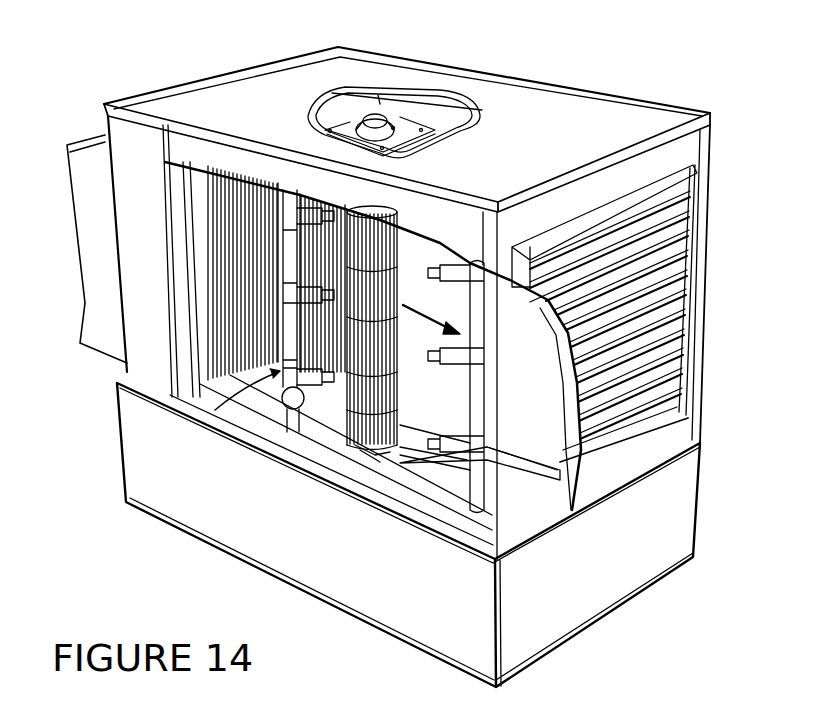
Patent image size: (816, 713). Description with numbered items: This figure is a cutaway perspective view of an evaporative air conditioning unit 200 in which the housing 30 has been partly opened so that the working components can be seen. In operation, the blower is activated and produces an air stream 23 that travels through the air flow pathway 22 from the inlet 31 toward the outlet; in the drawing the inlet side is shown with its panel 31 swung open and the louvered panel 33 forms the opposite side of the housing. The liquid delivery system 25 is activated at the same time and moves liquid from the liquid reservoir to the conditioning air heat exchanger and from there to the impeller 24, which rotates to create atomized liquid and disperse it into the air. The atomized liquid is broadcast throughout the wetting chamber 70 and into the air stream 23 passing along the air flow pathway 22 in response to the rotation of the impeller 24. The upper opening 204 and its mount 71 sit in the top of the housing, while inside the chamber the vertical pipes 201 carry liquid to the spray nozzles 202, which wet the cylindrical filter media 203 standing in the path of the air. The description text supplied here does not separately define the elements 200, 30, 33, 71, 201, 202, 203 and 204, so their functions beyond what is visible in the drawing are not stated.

The evaporative cooler unit 200 is at (308, 39).
The cabinet 30 is at (627, 95).
The inlet 31 is at (82, 152).
The louvered panel 33 is at (708, 254).
The air flow pathway 22 is at (373, 336).
The air stream 23 is at (431, 312).
The impeller 24 is at (375, 455).
The liquid delivery system 25 is at (205, 417).
The wetting chamber 70 is at (487, 398).
The fan motor mount 71 is at (470, 133).
The water distribution pipe 201 is at (282, 324).
The spray nozzle 202 is at (290, 298).
The cylindrical filter media 203 is at (362, 225).
The fan opening 204 is at (405, 108).